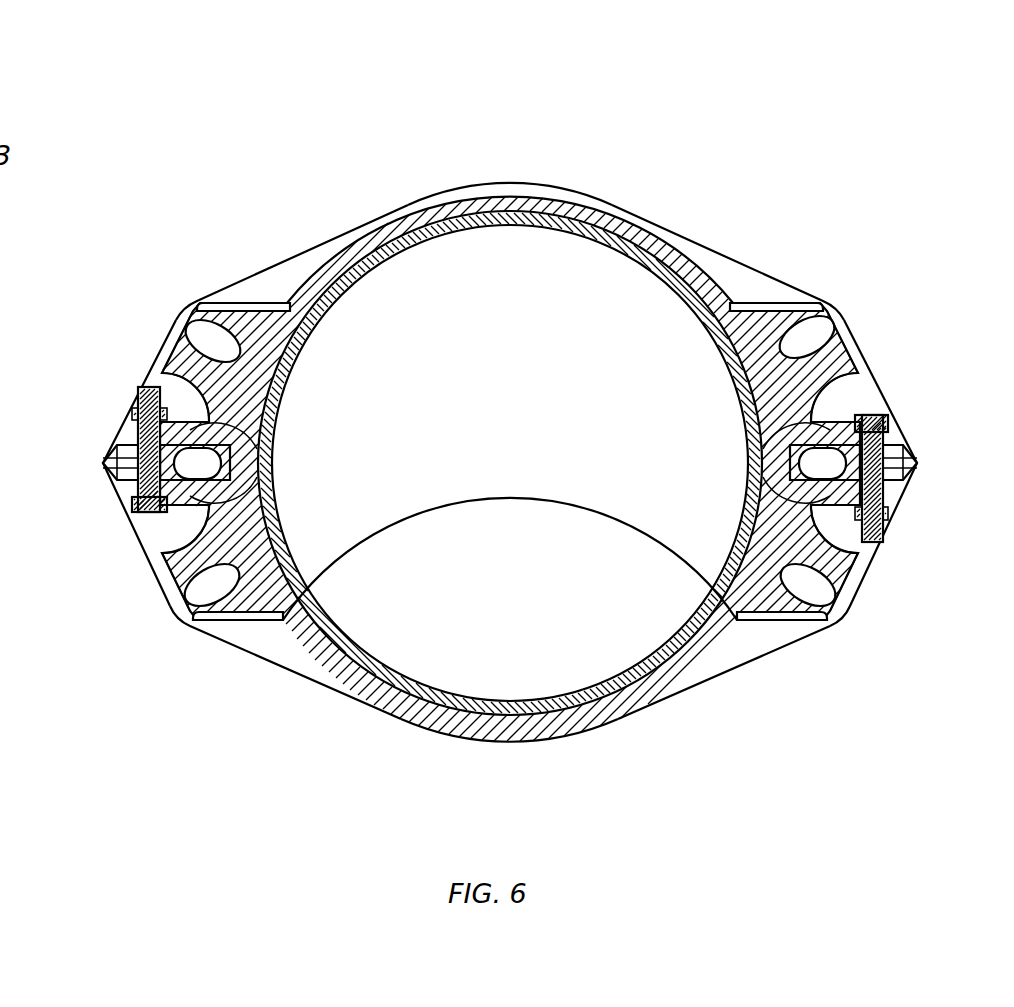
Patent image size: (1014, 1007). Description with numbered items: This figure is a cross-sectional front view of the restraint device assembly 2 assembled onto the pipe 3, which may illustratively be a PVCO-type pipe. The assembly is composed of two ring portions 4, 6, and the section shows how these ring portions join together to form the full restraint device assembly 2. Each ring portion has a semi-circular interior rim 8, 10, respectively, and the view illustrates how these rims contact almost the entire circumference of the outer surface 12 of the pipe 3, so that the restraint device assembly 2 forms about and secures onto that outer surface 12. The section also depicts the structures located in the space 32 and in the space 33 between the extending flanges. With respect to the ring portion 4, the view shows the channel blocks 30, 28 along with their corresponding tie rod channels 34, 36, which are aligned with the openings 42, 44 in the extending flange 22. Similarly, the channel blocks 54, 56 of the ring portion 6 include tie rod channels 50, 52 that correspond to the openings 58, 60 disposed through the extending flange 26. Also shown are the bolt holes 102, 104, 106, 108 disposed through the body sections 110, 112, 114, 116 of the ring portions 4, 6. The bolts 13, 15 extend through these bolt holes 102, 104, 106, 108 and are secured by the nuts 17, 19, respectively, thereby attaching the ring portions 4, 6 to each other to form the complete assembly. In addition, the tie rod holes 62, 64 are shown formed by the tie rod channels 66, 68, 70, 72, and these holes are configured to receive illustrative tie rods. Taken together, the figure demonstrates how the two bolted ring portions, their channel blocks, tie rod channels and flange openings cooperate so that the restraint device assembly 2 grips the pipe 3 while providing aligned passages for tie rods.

The restraint device assembly 2 is at (621, 166).
The pipe 3 is at (407, 642).
The ring portion 4 is at (432, 152).
The ring portion 6 is at (336, 788).
The semi-circular interior rim 8 is at (588, 237).
The semi-circular interior rim 10 is at (512, 712).
The outer surface 12 is at (512, 210).
The bolt 13 is at (110, 463).
The bolt 15 is at (890, 462).
The nut 17 is at (125, 440).
The nut 19 is at (895, 512).
The extending flange 22 is at (328, 237).
The extending flange 26 is at (325, 690).
The channel block 28 is at (762, 320).
The channel block 30 is at (262, 320).
The space 32 is at (739, 271).
The space 33 is at (739, 659).
The tie rod channel 34 is at (205, 372).
The tie rod channel 36 is at (815, 372).
The opening 42 is at (200, 335).
The opening 44 is at (830, 345).
The tie rod channel 50 is at (237, 600).
The tie rod channel 52 is at (775, 600).
The channel block 54 is at (200, 552).
The channel block 56 is at (835, 552).
The opening 58 is at (185, 592).
The opening 60 is at (835, 592).
The tie rod hole 62 is at (203, 467).
The tie rod hole 64 is at (818, 467).
The tie rod channel 66 is at (240, 425).
The tie rod channel 68 is at (240, 500).
The tie rod channel 70 is at (780, 425).
The tie rod channel 72 is at (780, 500).
The bolt hole 102 is at (135, 425).
The bolt hole 104 is at (885, 432).
The bolt hole 106 is at (145, 492).
The bolt hole 108 is at (880, 497).
The body section 110 is at (150, 397).
The body section 112 is at (845, 418).
The body section 114 is at (205, 540).
The body section 116 is at (868, 540).